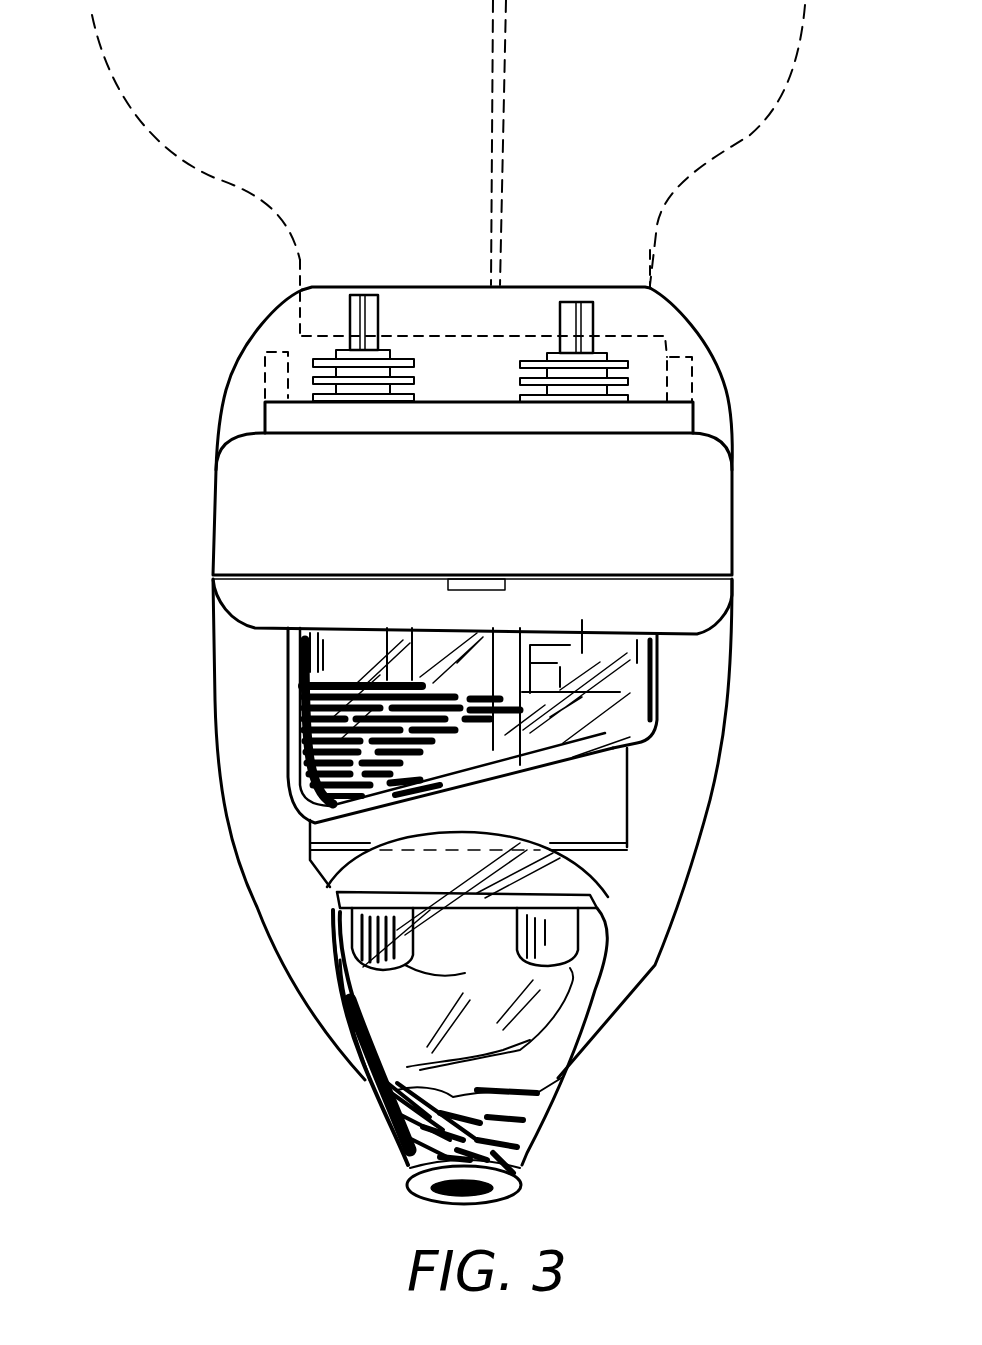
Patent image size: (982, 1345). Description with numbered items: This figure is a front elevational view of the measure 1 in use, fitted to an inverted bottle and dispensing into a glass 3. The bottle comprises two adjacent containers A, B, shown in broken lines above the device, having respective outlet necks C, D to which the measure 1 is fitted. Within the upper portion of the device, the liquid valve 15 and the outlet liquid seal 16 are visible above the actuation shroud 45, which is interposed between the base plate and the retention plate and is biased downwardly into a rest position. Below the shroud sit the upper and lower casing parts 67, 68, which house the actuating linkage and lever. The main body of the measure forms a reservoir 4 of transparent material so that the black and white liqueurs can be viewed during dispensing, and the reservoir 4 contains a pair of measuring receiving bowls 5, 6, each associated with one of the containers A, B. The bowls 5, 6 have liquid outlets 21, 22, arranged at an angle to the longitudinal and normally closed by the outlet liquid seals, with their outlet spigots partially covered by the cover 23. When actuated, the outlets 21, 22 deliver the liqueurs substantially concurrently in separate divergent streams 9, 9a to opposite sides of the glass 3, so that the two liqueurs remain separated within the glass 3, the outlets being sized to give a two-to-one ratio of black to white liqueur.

The measure 1 is at (688, 780).
The glass 3 is at (550, 1100).
The reservoir 4 is at (657, 682).
The measuring receiving bowl 5 is at (337, 655).
The measuring receiving bowl 6 is at (585, 647).
The divergent stream 9 is at (347, 1003).
The divergent stream 9a is at (590, 976).
The liquid valve 15 is at (587, 322).
The outlet liquid seal 16 is at (350, 308).
The liquid outlet 21 is at (350, 963).
The liquid outlet 22 is at (607, 953).
The cover 23 is at (614, 831).
The actuation shroud 45 is at (693, 422).
The upper casing part 67 is at (720, 480).
The lower casing part 68 is at (723, 597).
The container A is at (255, 155).
The container B is at (718, 123).
The outlet neck C is at (327, 237).
The outlet neck D is at (623, 247).